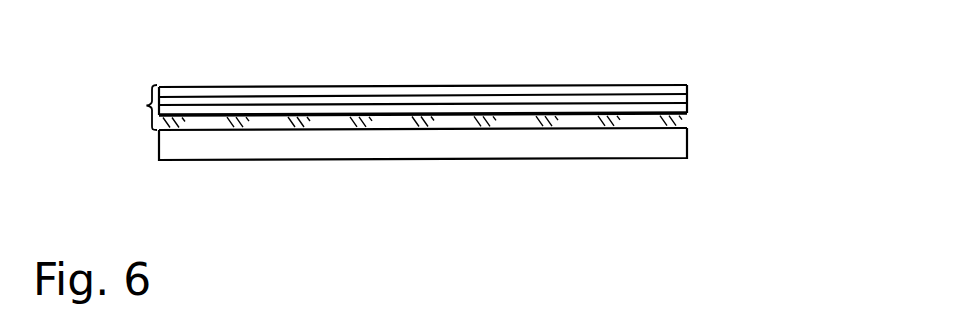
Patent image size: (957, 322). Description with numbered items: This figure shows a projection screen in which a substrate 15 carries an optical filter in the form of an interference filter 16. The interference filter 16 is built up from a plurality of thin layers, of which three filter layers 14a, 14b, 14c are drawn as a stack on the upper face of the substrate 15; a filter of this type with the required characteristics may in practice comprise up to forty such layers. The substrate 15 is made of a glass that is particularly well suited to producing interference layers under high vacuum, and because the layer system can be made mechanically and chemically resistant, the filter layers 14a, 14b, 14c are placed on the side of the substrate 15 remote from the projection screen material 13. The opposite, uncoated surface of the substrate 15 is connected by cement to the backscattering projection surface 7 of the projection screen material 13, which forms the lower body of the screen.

The interference filter 16 is at (145, 105).
The filter layer 14a is at (688, 88).
The filter layer 14b is at (688, 96).
The filter layer 14c is at (688, 105).
The substrate 15 is at (683, 120).
The backscattering projection surface 7 is at (310, 130).
The projection screen material 13 is at (450, 145).